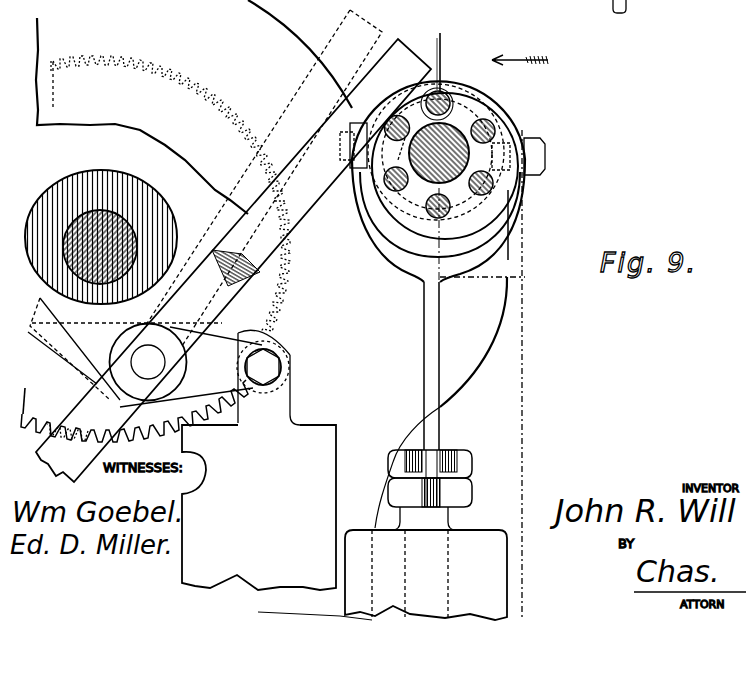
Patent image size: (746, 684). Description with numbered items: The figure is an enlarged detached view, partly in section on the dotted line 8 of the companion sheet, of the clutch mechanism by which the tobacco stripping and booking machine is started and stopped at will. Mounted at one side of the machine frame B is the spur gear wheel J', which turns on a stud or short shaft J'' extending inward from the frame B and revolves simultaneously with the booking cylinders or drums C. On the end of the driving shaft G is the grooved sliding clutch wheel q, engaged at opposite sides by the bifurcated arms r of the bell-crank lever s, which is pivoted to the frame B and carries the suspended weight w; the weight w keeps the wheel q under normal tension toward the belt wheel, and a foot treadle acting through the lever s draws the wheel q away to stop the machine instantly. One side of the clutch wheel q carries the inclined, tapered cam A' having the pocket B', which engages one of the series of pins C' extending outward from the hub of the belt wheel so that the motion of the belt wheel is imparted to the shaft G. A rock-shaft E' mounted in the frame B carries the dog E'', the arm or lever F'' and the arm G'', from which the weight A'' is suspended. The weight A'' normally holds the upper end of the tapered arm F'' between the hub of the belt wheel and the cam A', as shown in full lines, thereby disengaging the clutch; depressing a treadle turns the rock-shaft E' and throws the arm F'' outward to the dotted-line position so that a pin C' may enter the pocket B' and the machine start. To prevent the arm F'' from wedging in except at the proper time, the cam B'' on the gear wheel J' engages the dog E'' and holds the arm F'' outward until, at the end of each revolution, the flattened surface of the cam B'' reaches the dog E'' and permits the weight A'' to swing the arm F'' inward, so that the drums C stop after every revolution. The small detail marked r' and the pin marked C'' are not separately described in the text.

The booking cylinder or drum C is at (194, 107).
The spur gear wheel J' is at (168, 248).
The cam B'' is at (101, 225).
The stud or short shaft J'' is at (119, 225).
The arm or lever F'' is at (233, 246).
The dog E'' is at (125, 349).
The rock-shaft E' is at (148, 362).
The arm G'' is at (210, 376).
The weight A'' is at (259, 507).
The side or frame of the machine B is at (438, 294).
The pins C' is at (471, 112).
The driving shaft G is at (437, 165).
The pin C'' is at (399, 150).
The inclined cam A' is at (424, 49).
The section line 8- 8 is at (487, 315).
The pocket B' is at (415, 89).
The grooved sliding wheel q is at (520, 73).
The bracket r' is at (353, 182).
The bifurcated arms r is at (518, 199).
The bell-crank lever s is at (441, 402).
The weight w is at (382, 535).